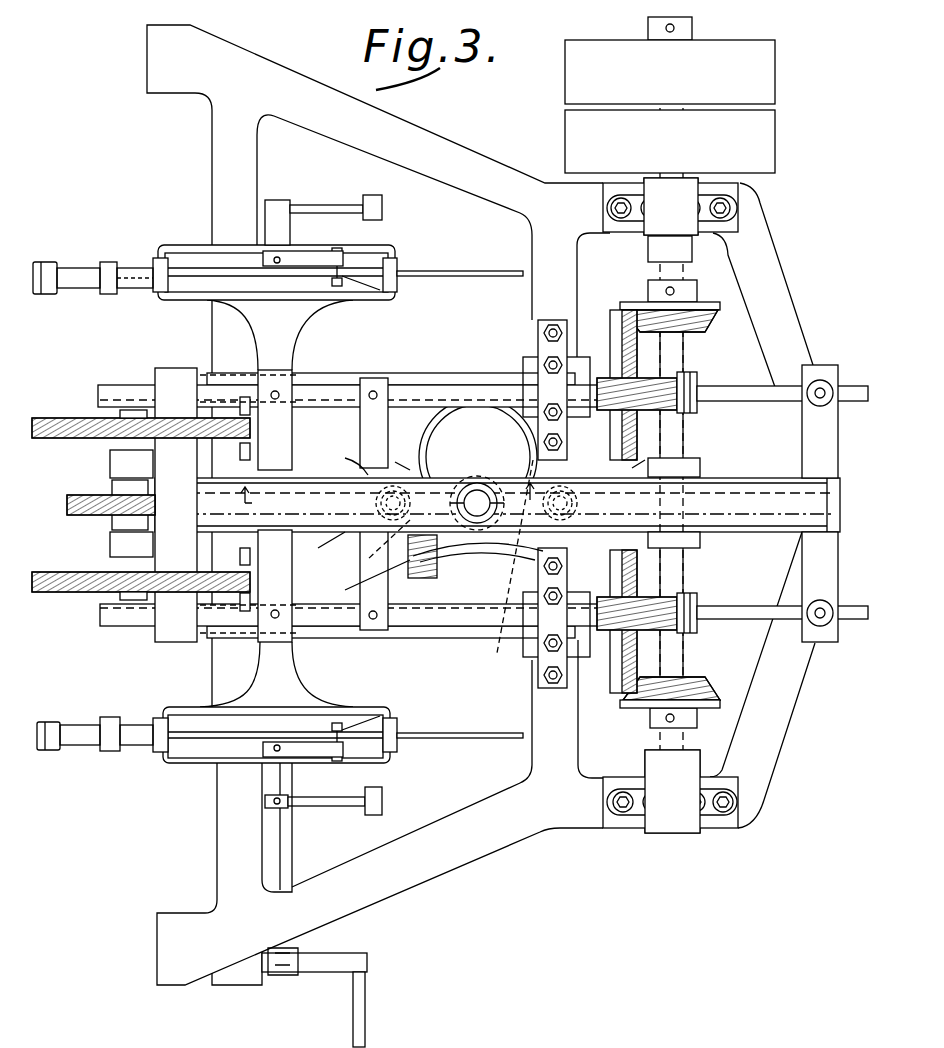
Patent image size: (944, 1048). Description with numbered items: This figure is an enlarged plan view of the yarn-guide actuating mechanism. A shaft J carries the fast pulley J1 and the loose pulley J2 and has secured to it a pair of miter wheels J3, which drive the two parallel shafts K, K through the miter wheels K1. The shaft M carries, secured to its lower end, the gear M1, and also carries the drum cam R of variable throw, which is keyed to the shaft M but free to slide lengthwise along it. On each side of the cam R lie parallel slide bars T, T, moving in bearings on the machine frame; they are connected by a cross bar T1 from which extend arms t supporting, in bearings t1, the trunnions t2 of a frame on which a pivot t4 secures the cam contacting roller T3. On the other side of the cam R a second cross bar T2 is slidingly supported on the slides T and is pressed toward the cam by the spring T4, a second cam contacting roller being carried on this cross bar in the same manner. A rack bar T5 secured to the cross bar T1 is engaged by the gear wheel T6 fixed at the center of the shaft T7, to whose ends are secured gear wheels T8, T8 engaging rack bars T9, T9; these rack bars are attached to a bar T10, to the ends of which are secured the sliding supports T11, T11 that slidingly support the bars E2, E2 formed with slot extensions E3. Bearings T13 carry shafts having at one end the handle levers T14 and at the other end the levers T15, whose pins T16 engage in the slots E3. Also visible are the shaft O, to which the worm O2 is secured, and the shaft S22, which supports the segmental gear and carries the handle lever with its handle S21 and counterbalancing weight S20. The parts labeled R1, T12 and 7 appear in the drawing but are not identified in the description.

The shaft J is at (672, 425).
The fast pulley J1 is at (670, 72).
The loose pulley J2 is at (670, 141).
The miter wheel J3 is at (718, 308).
The parallel shaft K is at (398, 374).
The miter wheel K1 is at (622, 345).
The slide bar T is at (349, 505).
The cross bar T1 is at (374, 504).
The cross bar T2 is at (557, 504).
The cam contacting roller T3 is at (426, 567).
The spring T4 is at (668, 378).
The rack bar T5 is at (110, 492).
The gear wheel T6 is at (115, 516).
The shaft T7 is at (115, 445).
The gear wheel T8 is at (98, 418).
The rack bar T9 is at (60, 440).
The bar T10 is at (250, 506).
The sliding support T11 is at (215, 476).
The lower housing T12 is at (180, 765).
The bearing T13 is at (205, 822).
The handle lever T14 is at (352, 205).
The lever T15 is at (335, 285).
The pin T16 is at (380, 292).
The bar E2 is at (440, 742).
The slot extension E3 is at (345, 275).
The shaft M is at (497, 505).
The gear M1 is at (500, 556).
The shaft O is at (492, 534).
The worm O2 is at (422, 573).
The drum cam R is at (478, 457).
The casing ring R1 is at (438, 444).
The arm t is at (369, 527).
The bearing t1 is at (630, 471).
The trunnion t2 is at (345, 511).
The pivot t4 is at (322, 546).
The section line 7 is at (380, 493).
The counterbalancing weight S20 is at (244, 985).
The handle S21 is at (365, 1000).
The shaft S22 is at (292, 855).